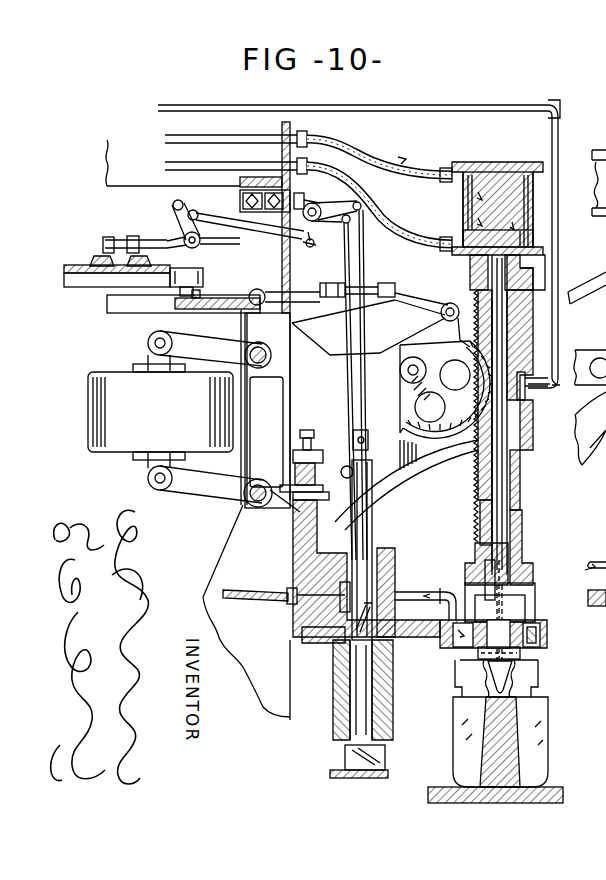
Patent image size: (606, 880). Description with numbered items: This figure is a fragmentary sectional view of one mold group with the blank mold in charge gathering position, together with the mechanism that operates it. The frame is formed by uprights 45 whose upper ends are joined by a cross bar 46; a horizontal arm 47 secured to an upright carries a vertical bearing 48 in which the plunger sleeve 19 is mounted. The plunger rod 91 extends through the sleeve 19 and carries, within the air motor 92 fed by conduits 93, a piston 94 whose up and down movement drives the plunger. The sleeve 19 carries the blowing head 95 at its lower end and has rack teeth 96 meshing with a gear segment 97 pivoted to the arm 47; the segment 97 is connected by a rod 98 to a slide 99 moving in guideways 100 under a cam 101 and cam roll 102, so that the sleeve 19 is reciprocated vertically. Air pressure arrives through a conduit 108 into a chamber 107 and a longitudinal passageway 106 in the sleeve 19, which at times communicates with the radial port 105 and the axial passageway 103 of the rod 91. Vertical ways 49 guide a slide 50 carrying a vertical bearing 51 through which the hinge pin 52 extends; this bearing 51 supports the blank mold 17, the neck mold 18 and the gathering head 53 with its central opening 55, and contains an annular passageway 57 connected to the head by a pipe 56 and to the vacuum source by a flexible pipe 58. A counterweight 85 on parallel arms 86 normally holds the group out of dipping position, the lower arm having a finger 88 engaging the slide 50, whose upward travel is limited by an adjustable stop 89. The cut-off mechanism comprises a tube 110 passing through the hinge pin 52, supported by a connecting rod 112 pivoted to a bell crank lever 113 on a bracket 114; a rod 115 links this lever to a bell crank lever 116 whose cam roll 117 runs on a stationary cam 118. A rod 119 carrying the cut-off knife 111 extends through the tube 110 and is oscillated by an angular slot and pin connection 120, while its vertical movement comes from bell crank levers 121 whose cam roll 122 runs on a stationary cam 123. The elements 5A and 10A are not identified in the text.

The conduit 108 is at (493, 116).
The conduits 93 is at (217, 154).
The cross bar 46 is at (238, 187).
The air motor 92 is at (501, 162).
The piston 94 is at (465, 230).
The vertical bearing 48 is at (537, 294).
The plunger sleeve 19 is at (490, 281).
The rack teeth 96 is at (478, 468).
The longitudinal passageway 106 is at (512, 466).
The plunger rod 91 is at (508, 491).
The chamber 107 is at (526, 398).
The bracket 114 is at (303, 199).
The bell crank levers 121 is at (351, 204).
The bell crank lever 113 is at (338, 236).
The rod 115 is at (282, 237).
The uprights 45 is at (240, 244).
The bell crank lever 116 is at (160, 250).
The cam roll 122 is at (134, 228).
The cam roll 117 is at (106, 236).
The stationary cam 118 is at (92, 259).
The stationary cam 123 is at (110, 288).
The cam 101 is at (200, 268).
The cam roll 102 is at (204, 278).
The guideways 100 is at (130, 316).
The slide 99 is at (222, 312).
The vertical ways 49 is at (290, 465).
The parallel arms 86 is at (180, 340).
The counterweight 85 is at (110, 415).
The connecting rod 112 is at (344, 323).
The rod 98 is at (405, 288).
The horizontal arm 47 is at (389, 362).
The gear segment 97 is at (440, 468).
The rod 119 is at (366, 440).
The tube or sleeve 110 is at (368, 531).
The adjustable stop 89 is at (308, 429).
The finger 88 is at (296, 518).
The slide 50 is at (312, 522).
The vertical bearing 51 is at (395, 553).
The hinge pin 52 is at (333, 728).
The cut-off knife 111 is at (372, 778).
The angular slot and pin connection 120 is at (350, 645).
The flexible pipe 58 is at (266, 602).
The annular passageway 57 is at (414, 592).
The pipe 56 is at (445, 592).
The radial port 105 is at (478, 562).
The blowing head 95 is at (525, 580).
The axial passageway 103 is at (520, 598).
The filling head 5A is at (536, 622).
The gathering head 53 is at (542, 633).
The central opening 55 is at (540, 655).
The filling tube 10A is at (478, 656).
The neck mold 18 is at (540, 672).
The blank mold 17 is at (548, 713).